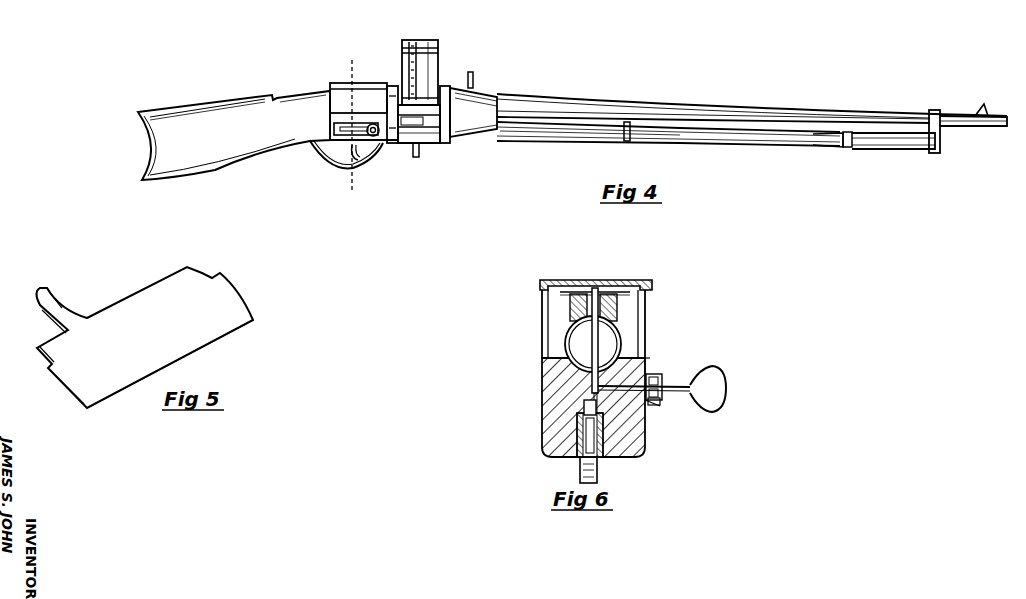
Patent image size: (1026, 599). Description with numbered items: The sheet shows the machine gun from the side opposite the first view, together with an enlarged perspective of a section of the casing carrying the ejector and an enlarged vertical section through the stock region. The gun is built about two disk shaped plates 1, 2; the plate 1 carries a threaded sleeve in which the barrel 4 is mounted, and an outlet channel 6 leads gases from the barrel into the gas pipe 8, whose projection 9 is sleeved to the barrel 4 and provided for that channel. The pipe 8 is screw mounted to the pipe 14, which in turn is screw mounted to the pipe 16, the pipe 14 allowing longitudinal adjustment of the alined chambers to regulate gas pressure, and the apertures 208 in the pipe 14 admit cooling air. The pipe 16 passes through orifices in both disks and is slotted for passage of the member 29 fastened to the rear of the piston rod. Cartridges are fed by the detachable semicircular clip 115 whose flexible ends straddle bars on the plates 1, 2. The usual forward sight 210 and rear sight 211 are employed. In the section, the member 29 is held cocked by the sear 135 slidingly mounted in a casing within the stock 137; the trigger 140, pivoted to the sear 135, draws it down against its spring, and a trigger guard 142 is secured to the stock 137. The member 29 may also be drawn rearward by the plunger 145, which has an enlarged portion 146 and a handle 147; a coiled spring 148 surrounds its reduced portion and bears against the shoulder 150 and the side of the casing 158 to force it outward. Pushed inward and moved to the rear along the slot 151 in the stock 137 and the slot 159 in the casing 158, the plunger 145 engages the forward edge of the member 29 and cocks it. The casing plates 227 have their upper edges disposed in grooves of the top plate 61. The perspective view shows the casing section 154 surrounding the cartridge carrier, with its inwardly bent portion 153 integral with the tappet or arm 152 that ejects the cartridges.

In FIG. 4, the disk shaped plate 1 is at (458, 118).
In FIG. 4, the disk shaped plate 2 is at (396, 143).
In FIG. 4, the barrel 4 is at (744, 108).
In FIG. 4, the outlet channel 6 is at (351, 121).
In FIG. 4, the gas pipe 8 is at (907, 148).
In FIG. 4, the projection 9 is at (946, 130).
In FIG. 4, the pipe 14 is at (744, 143).
In FIG. 4, the pipe 16 is at (573, 138).
In FIG. 6, the pipe 16 is at (544, 368).
In FIG. 6, the member 29 is at (566, 343).
In FIG. 4, the top plate 61 is at (372, 86).
In FIG. 6, the top plate 61 is at (552, 280).
In FIG. 4, the clip 115 is at (430, 42).
In FIG. 6, the sear 135 is at (592, 399).
In FIG. 4, the stock 137 is at (232, 160).
In FIG. 6, the stock 137 is at (546, 443).
In FIG. 4, the trigger 140 is at (365, 163).
In FIG. 4, the trigger guard 142 is at (368, 170).
In FIG. 6, the trigger guard 142 is at (598, 481).
In FIG. 6, the plunger 145 is at (622, 417).
In FIG. 6, the enlarged portion 146 is at (663, 378).
In FIG. 4, the handle 147 is at (378, 136).
In FIG. 6, the handle 147 is at (727, 390).
In FIG. 6, the coiled spring 148 is at (662, 374).
In FIG. 6, the shoulder 150 is at (655, 403).
In FIG. 6, the slot 151 is at (625, 442).
In FIG. 5, the tappet or arm 152 is at (52, 300).
In FIG. 5, the inwardly bent portion 153 is at (146, 290).
In FIG. 5, the casing section 154 is at (211, 328).
In FIG. 6, the casing 158 is at (648, 366).
In FIG. 4, the slot 159 is at (340, 136).
In FIG. 6, the slot 159 is at (662, 374).
In FIG. 4, the apertures 208 is at (652, 138).
In FIG. 4, the forward sight 210 is at (980, 108).
In FIG. 4, the rear sight 211 is at (474, 73).
In FIG. 4, the casing plates 227 is at (342, 93).
In FIG. 6, the casing plates 227 is at (648, 300).